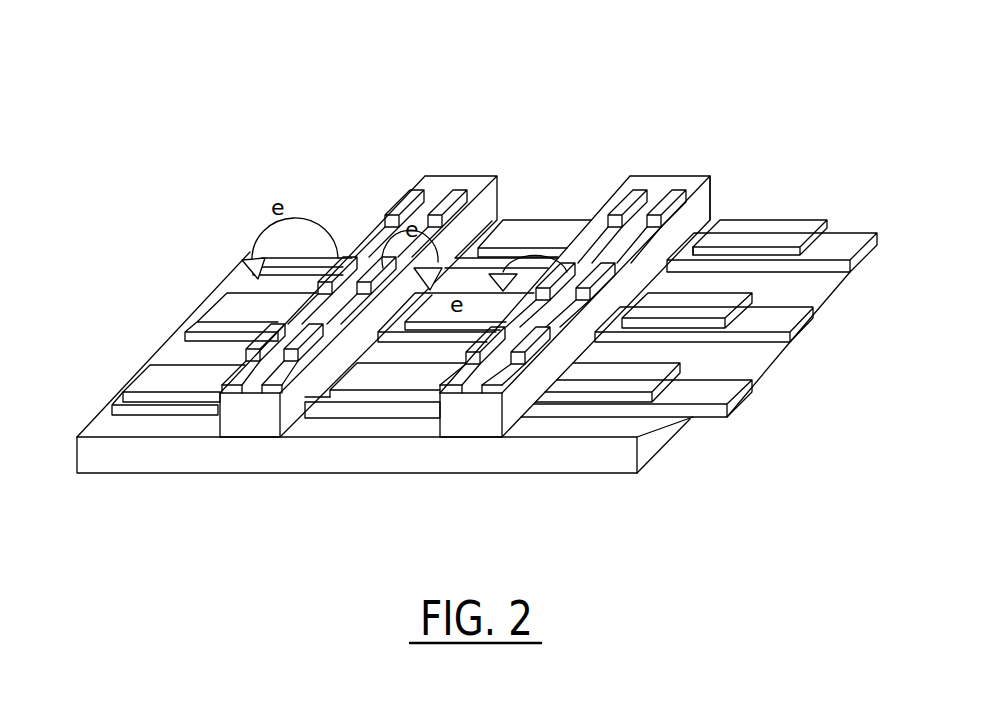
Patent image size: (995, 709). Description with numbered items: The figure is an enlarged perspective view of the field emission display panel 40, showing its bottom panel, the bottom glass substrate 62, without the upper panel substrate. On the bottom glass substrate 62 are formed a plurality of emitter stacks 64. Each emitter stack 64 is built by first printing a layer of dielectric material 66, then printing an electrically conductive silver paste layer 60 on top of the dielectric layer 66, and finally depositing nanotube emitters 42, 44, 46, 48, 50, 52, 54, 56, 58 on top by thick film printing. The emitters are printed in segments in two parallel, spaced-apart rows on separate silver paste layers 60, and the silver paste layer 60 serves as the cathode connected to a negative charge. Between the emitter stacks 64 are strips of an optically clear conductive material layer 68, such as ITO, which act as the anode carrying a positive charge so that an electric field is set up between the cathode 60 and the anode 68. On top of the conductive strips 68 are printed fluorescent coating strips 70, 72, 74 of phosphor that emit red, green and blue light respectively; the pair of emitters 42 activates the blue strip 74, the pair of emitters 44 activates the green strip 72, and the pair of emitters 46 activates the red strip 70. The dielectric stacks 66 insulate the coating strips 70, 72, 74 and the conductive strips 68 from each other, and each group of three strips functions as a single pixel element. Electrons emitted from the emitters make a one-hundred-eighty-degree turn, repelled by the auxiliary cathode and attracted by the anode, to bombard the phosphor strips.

The field emission display panel 40 is at (579, 88).
The nanotube emitter pair 42 is at (498, 192).
The nanotube emitter pair 44 is at (394, 207).
The nanotube emitter pair 46 is at (252, 418).
The nanotube emitter 48 is at (393, 203).
The nanotube emitter 50 is at (336, 255).
The nanotube emitter 52 is at (247, 333).
The nanotube emitter 54 is at (712, 215).
The nanotube emitter 56 is at (703, 250).
The nanotube emitter 58 is at (518, 340).
The silver paste layer 60 is at (440, 212).
The bottom glass substrate 62 is at (618, 460).
The emitter stack 64 is at (215, 445).
The dielectric material layer 66 is at (243, 368).
The conductive material strip 68 is at (112, 408).
The red fluorescent coating strip 70 is at (396, 360).
The green fluorescent coating strip 72 is at (840, 290).
The blue fluorescent coating strip 74 is at (599, 203).